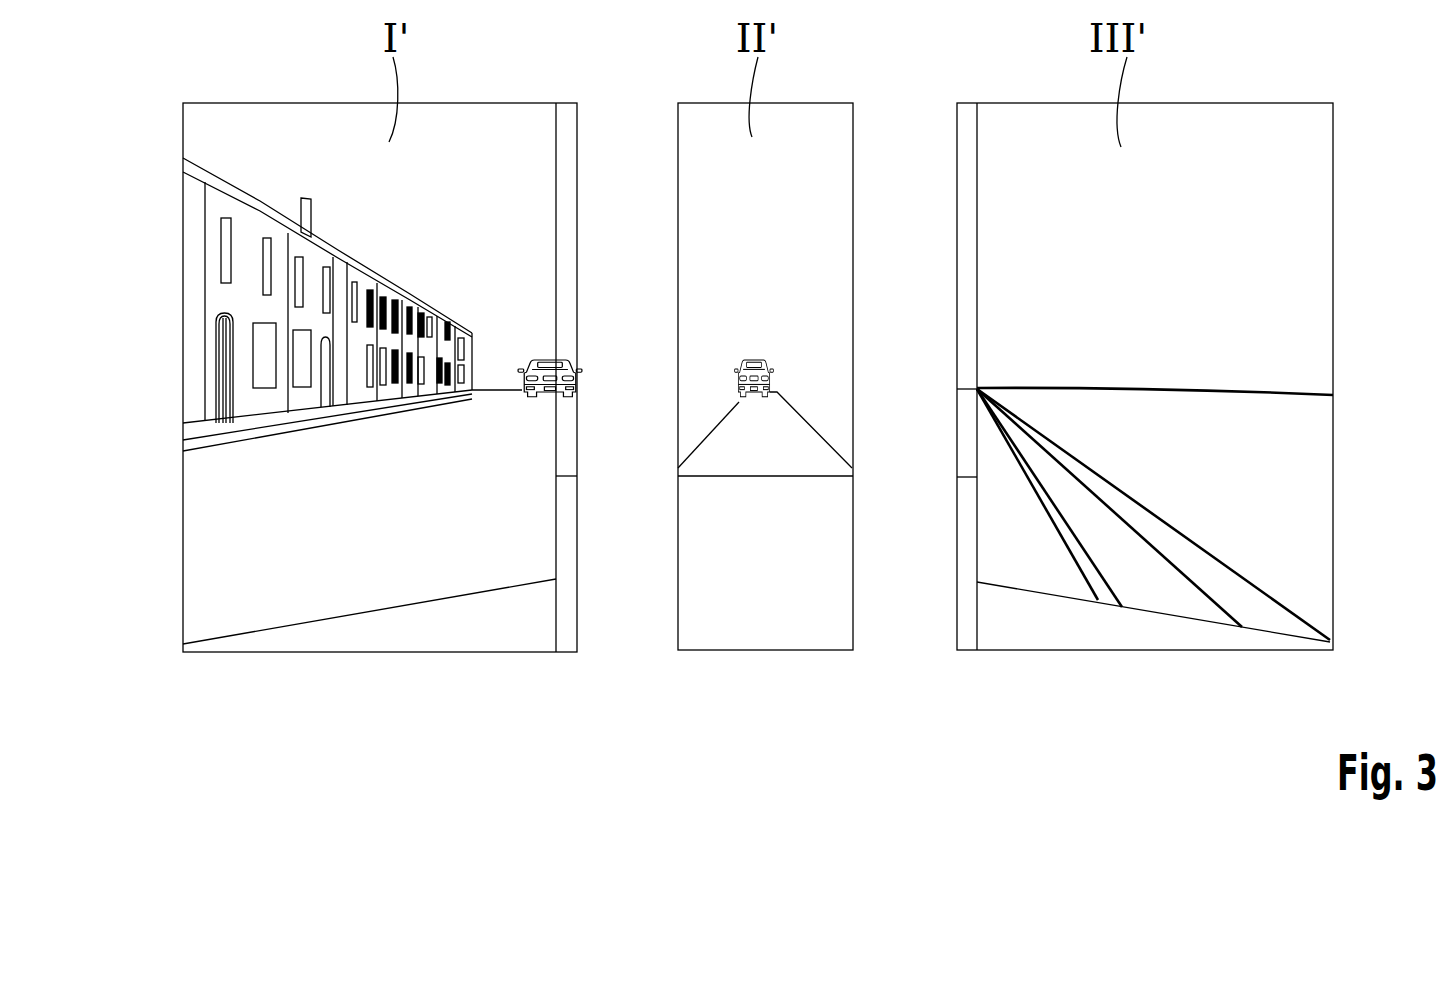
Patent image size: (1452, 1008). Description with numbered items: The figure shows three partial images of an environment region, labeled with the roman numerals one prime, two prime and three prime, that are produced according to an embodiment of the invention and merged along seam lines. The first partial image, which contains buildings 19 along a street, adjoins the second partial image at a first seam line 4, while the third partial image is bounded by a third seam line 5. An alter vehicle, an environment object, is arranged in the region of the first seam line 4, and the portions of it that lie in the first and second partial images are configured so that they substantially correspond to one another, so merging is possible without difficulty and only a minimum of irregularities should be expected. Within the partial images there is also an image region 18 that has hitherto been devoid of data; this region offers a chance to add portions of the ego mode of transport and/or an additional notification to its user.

The first seam line 4 is at (556, 305).
The third seam line 5 is at (975, 307).
The image region devoid of data 18 is at (800, 607).
The buildings 19 is at (220, 300).